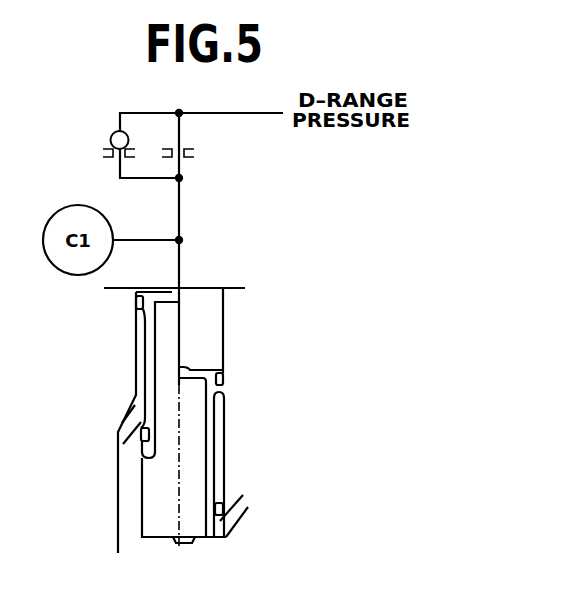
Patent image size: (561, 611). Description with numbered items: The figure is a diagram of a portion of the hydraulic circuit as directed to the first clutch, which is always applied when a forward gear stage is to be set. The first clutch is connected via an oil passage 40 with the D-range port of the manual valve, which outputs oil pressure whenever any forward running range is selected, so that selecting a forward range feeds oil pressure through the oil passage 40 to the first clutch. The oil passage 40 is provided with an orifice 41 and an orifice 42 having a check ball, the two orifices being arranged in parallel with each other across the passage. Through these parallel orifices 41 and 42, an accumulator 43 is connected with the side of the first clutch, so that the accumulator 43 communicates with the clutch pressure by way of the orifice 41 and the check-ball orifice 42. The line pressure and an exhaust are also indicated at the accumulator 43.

The oil passage 40 is at (180, 205).
The orifice 41 is at (181, 148).
The orifice having a check ball 42 is at (110, 140).
The accumulator 43 is at (137, 363).